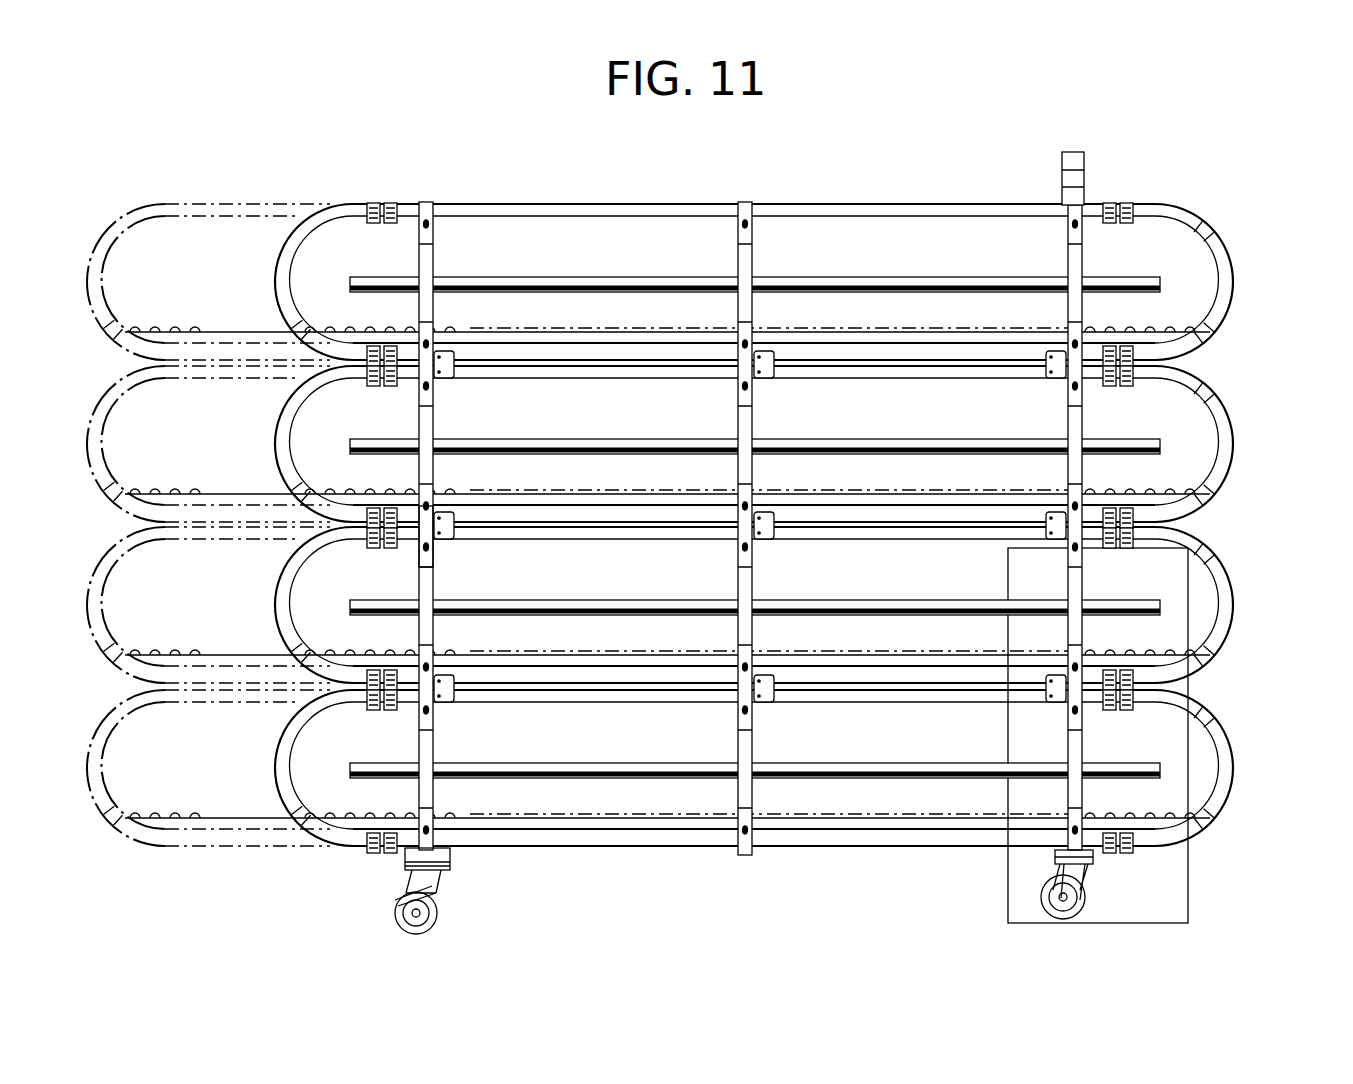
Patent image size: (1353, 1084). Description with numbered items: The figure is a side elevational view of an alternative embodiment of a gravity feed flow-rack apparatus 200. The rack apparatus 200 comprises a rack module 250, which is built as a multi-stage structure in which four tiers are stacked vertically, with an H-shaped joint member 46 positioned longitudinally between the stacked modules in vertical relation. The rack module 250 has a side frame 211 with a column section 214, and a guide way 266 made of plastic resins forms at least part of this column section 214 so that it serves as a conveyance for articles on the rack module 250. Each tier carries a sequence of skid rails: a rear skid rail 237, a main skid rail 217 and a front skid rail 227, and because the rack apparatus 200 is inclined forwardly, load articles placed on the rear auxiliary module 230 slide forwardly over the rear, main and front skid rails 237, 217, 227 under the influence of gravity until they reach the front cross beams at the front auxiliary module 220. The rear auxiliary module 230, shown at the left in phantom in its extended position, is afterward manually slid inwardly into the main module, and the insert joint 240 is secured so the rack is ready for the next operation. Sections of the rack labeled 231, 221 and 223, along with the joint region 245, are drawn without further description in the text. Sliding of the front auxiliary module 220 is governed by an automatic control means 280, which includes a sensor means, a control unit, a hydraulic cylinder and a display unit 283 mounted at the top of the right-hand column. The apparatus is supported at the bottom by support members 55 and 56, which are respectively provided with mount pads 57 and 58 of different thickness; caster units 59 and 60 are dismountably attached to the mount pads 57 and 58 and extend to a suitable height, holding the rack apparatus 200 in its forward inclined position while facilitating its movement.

The rack apparatus 200 is at (920, 165).
The rack module 250 is at (790, 203).
The display unit 283 is at (1088, 160).
The front auxiliary module 220 is at (1226, 252).
The rear auxiliary module 230 is at (276, 262).
The left shelf section 231 is at (393, 275).
The column section 214 is at (433, 262).
The side frame 211 is at (628, 273).
The main skid rail 217 is at (641, 335).
The guide way 266 is at (912, 280).
The right shelf section 221 is at (1156, 279).
The front skid rail 227 is at (1168, 330).
The lower rail 223 is at (1218, 346).
The joint member 46 is at (450, 385).
The insert joint 240 is at (1115, 386).
The rear skid rail 237 is at (345, 635).
The post joint 245 is at (435, 548).
The automatic control means 280 is at (1006, 575).
The mount pad 58 is at (408, 855).
The support member 56 is at (378, 902).
The caster unit 60 is at (407, 924).
The mount pad 57 is at (1045, 852).
The caster unit 59 is at (1042, 903).
The support member 55 is at (1097, 882).